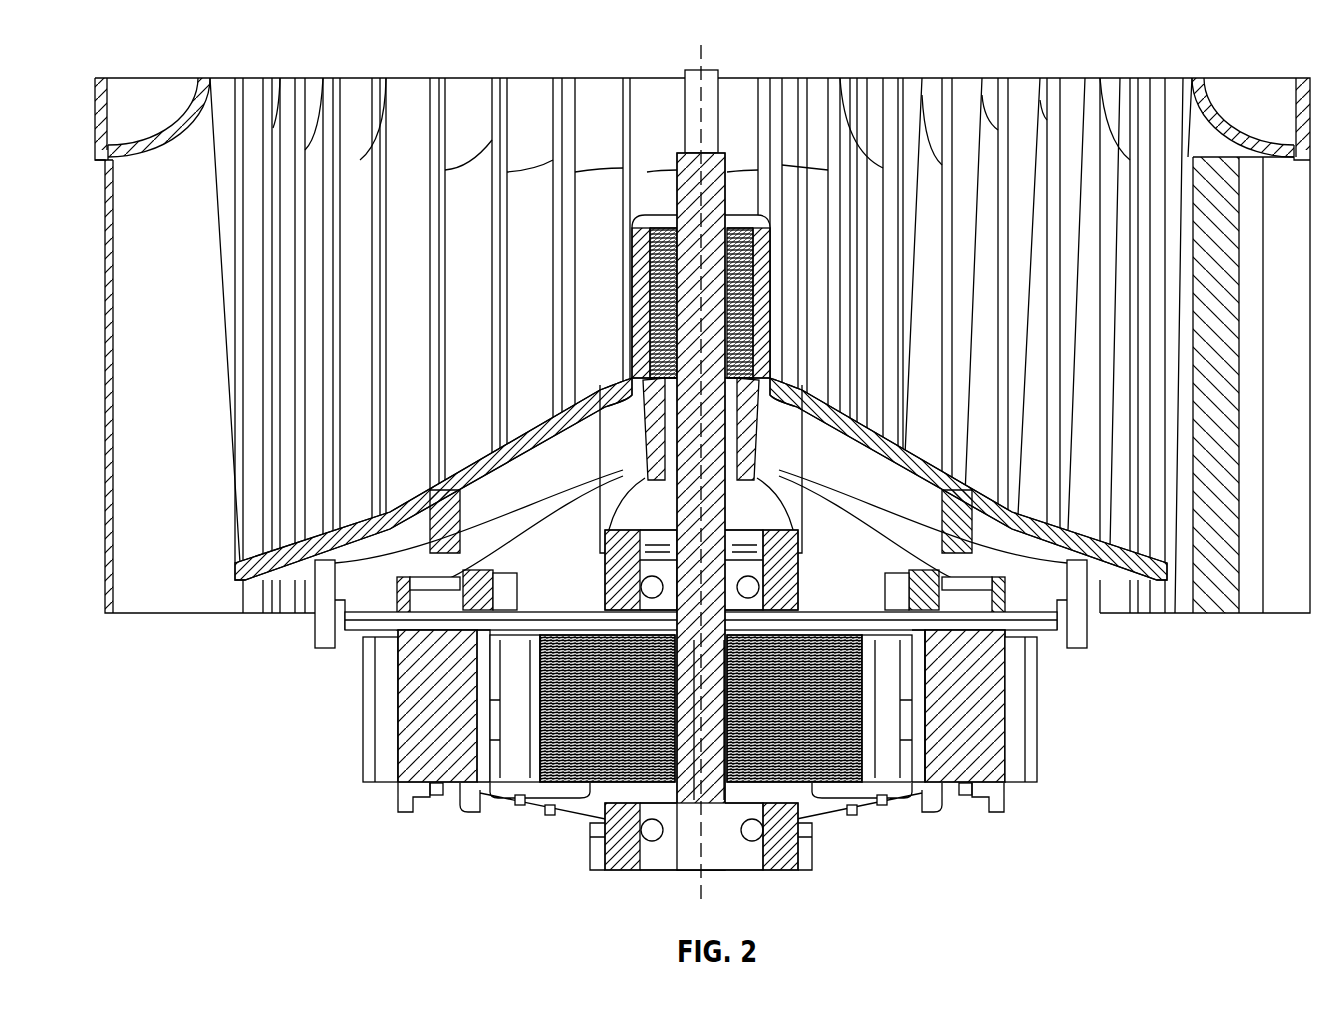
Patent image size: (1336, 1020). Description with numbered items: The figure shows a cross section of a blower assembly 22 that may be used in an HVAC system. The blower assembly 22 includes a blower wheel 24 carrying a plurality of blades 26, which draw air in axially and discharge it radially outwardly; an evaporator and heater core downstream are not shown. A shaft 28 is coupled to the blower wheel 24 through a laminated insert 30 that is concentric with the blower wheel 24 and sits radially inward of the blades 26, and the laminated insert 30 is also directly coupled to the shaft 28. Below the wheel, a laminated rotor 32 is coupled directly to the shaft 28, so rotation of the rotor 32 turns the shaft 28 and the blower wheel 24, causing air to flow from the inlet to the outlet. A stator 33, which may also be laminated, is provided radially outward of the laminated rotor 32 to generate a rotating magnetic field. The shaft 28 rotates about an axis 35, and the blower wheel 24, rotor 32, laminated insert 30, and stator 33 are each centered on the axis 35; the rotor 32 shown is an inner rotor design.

The blower assembly 22 is at (197, 747).
The blower wheel 24 is at (157, 600).
The blades 26 is at (477, 203).
The shaft 28 is at (715, 510).
The laminated insert 30 is at (755, 310).
The laminated rotor 32 is at (785, 720).
The stator 33 is at (435, 750).
The axis 35 is at (701, 880).